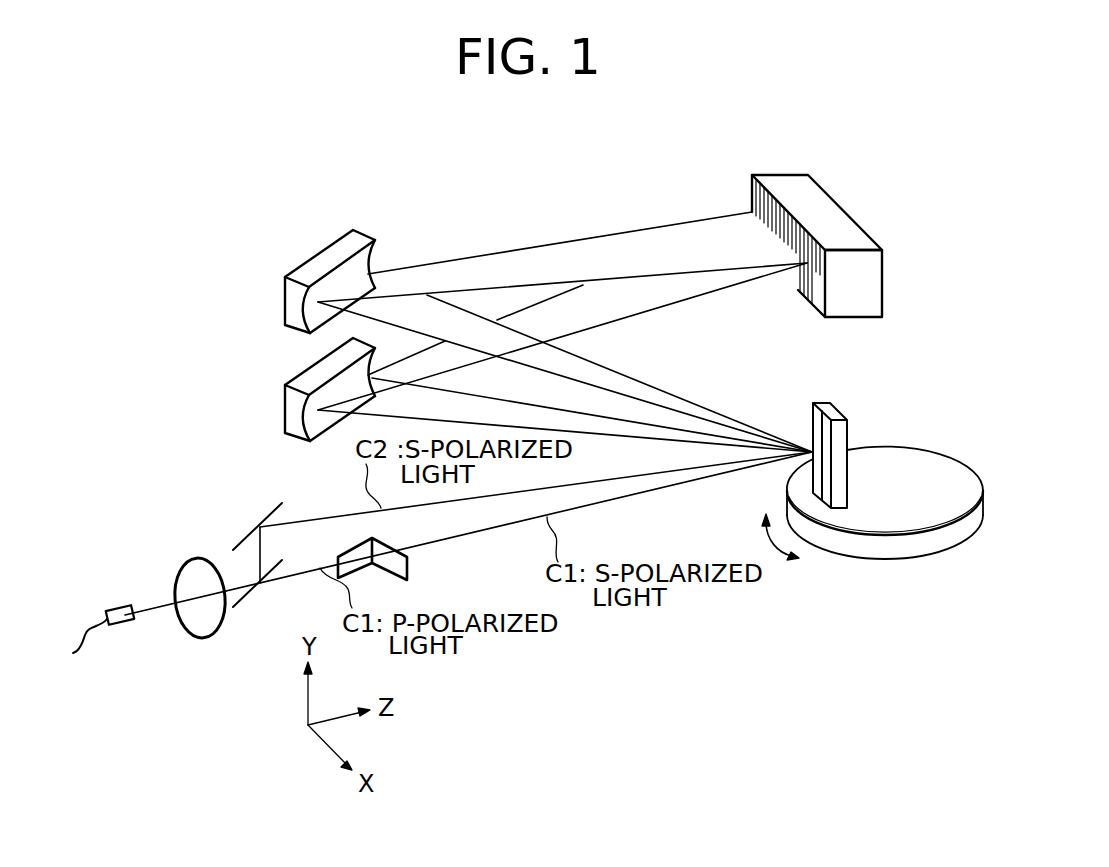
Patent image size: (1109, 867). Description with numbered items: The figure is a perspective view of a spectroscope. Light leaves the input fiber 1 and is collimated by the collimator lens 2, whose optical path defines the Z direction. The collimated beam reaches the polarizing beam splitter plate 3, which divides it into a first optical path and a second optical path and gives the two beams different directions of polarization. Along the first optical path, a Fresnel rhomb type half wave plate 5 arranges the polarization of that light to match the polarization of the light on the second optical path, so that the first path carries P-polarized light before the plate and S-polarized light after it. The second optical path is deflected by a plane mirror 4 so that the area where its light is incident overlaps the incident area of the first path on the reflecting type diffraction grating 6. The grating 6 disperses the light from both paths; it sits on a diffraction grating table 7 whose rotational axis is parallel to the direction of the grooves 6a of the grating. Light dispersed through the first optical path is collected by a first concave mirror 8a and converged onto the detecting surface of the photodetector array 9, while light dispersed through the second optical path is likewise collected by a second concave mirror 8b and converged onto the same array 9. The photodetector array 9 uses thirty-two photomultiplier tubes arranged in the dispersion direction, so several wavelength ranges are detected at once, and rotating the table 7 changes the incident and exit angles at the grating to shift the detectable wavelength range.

The input fiber 1 is at (117, 603).
The collimator lens 2 is at (177, 623).
The polarizing beam splitter plate 3 is at (237, 603).
The plane mirror 4 is at (247, 535).
The Fresnel rhomb type half wave plate 5 is at (408, 565).
The reflecting type diffraction grating 6 is at (833, 413).
The grooves 6a is at (818, 433).
The diffraction grating table 7 is at (900, 548).
The first concave mirror 8a is at (297, 262).
The second concave mirror 8b is at (283, 397).
The photodetector array 9 is at (850, 237).